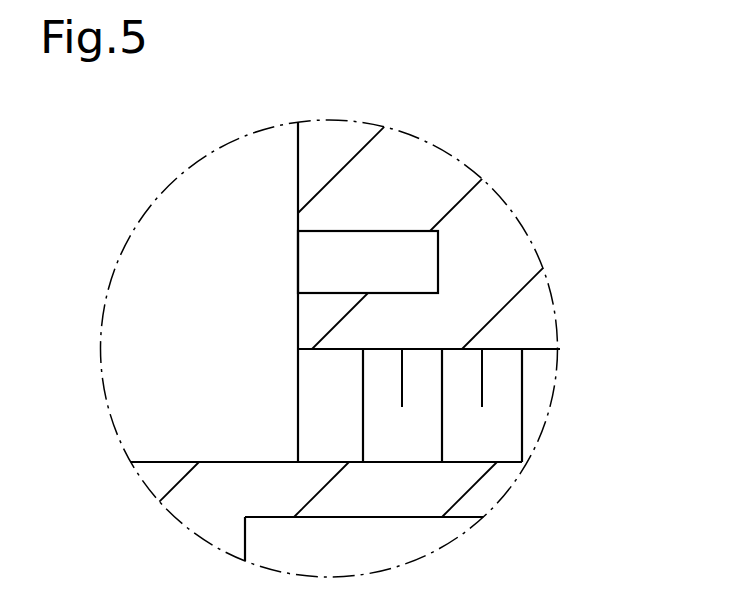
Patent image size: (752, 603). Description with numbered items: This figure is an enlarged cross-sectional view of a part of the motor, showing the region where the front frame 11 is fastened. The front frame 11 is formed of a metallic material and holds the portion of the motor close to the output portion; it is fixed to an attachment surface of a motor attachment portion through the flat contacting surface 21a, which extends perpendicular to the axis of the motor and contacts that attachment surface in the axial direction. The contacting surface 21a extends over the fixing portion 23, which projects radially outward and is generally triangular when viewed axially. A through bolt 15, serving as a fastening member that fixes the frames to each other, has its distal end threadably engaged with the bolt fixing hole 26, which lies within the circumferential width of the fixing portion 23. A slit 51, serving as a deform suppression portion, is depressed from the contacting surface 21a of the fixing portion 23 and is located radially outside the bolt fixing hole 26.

The front frame 11 is at (165, 462).
The through bolt 15 is at (533, 403).
The contacting surface 21a is at (298, 172).
The fixing portion 23 is at (425, 173).
The bolt fixing hole 26 is at (456, 350).
The slit 51 is at (333, 232).